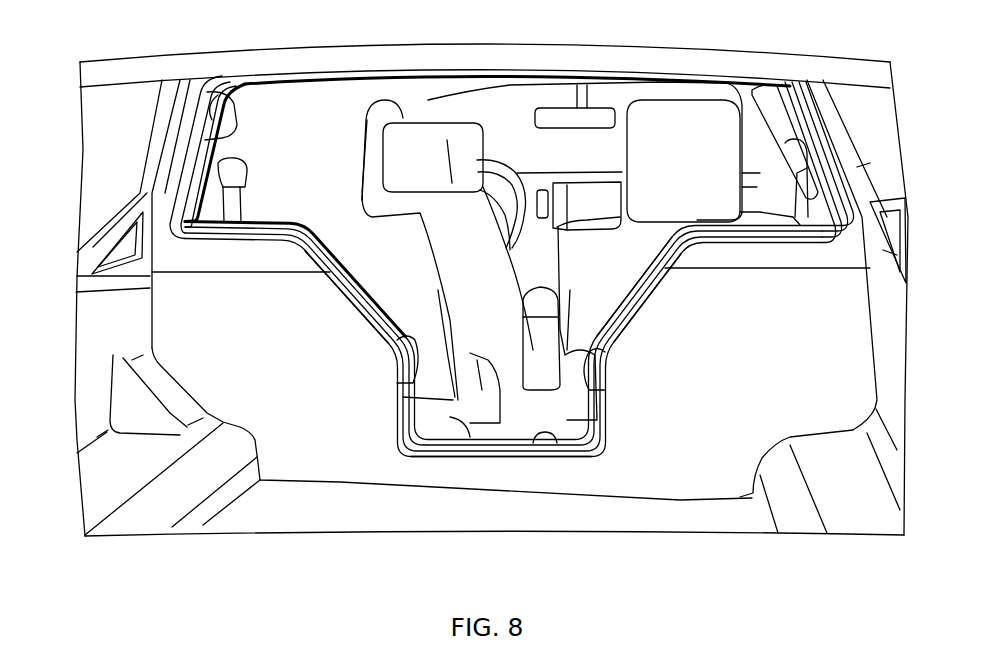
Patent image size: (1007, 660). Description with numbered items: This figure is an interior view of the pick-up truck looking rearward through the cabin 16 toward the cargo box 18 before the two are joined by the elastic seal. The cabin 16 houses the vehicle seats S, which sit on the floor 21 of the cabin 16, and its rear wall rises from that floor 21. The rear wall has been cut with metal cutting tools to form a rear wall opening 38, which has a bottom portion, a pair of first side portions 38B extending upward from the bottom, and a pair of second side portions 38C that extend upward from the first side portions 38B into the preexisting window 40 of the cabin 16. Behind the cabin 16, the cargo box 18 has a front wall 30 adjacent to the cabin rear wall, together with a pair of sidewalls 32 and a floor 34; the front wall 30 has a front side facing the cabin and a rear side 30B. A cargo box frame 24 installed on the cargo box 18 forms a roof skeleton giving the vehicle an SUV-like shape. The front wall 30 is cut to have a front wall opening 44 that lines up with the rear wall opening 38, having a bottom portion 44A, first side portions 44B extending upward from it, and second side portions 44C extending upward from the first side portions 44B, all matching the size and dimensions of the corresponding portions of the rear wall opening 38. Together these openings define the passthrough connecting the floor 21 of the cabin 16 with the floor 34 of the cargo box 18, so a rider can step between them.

The cabin 16 is at (523, 97).
The cargo box 18 is at (117, 472).
The floor 21 is at (508, 427).
The cargo box frame 24 is at (170, 137).
The front wall 30 is at (257, 367).
The rear side 30B is at (318, 418).
The sidewalls 32 is at (113, 317).
The floor 34 is at (387, 513).
The rear wall opening 38 is at (325, 230).
The first side portions 38B is at (583, 407).
The second side portions 38C is at (362, 290).
The preexisting window 40 is at (233, 88).
The front wall opening 44 is at (227, 252).
The bottom portion 44A is at (557, 448).
The first side portions 44B is at (375, 334).
The second side portions 44C is at (380, 340).
The vehicle seats S is at (297, 153).